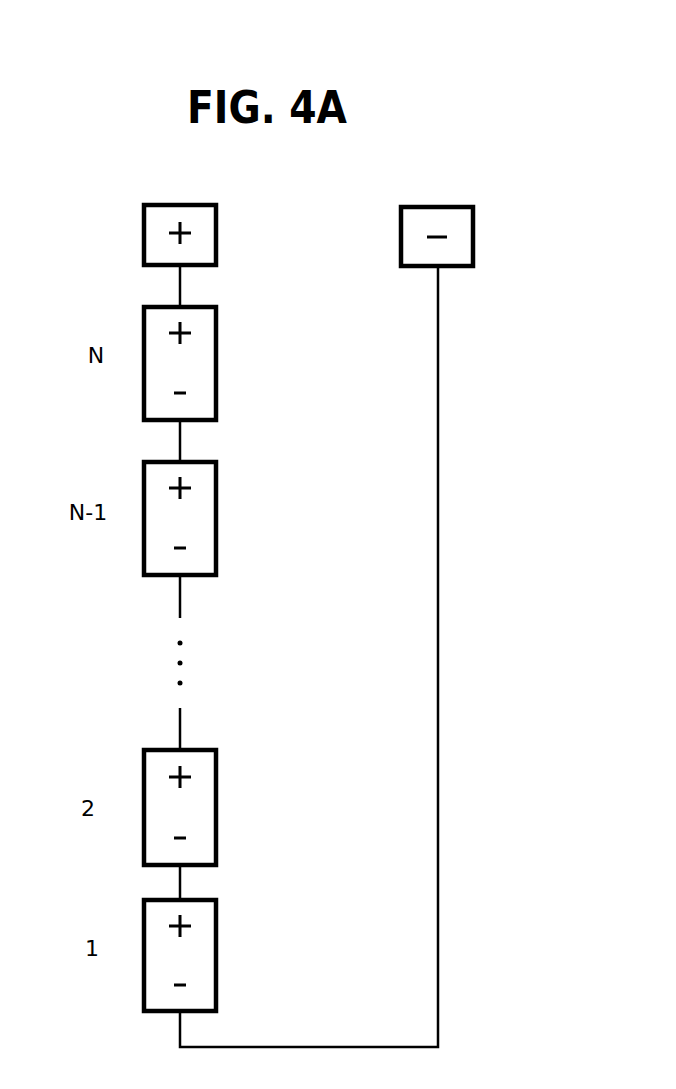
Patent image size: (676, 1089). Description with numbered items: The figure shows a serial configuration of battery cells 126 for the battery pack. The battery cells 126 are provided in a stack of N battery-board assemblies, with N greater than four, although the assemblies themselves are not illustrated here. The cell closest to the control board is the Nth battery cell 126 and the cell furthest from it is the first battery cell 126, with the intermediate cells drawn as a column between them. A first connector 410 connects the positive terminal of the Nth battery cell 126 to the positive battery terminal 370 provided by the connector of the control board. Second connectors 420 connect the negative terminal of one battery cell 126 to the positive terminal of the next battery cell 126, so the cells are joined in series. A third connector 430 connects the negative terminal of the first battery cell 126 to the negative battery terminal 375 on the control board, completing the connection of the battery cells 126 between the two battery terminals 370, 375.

The positive battery terminal 370 is at (142, 233).
The negative battery terminal 375 is at (476, 233).
The second connector 420 is at (181, 289).
The battery cell 126 is at (218, 355).
The first connector 410 is at (181, 444).
The third connector 430 is at (439, 655).